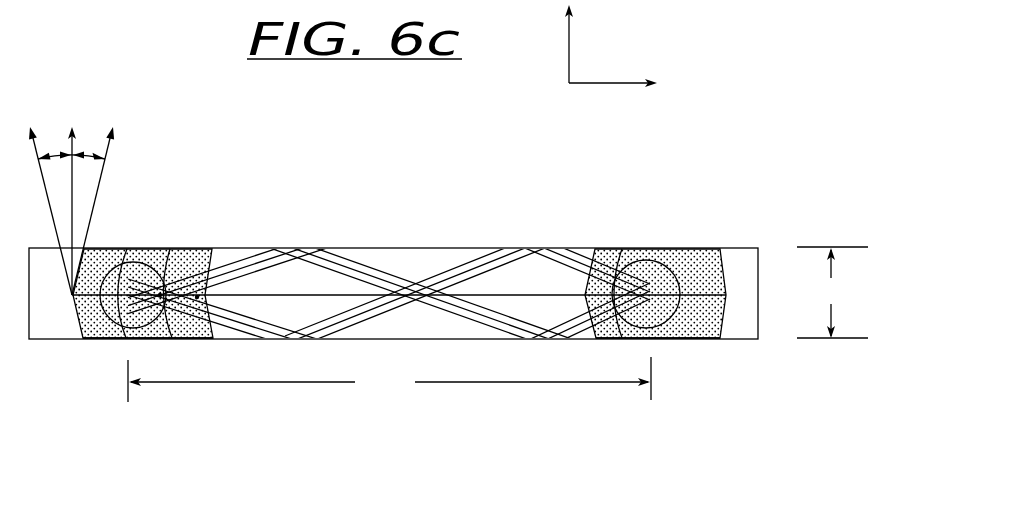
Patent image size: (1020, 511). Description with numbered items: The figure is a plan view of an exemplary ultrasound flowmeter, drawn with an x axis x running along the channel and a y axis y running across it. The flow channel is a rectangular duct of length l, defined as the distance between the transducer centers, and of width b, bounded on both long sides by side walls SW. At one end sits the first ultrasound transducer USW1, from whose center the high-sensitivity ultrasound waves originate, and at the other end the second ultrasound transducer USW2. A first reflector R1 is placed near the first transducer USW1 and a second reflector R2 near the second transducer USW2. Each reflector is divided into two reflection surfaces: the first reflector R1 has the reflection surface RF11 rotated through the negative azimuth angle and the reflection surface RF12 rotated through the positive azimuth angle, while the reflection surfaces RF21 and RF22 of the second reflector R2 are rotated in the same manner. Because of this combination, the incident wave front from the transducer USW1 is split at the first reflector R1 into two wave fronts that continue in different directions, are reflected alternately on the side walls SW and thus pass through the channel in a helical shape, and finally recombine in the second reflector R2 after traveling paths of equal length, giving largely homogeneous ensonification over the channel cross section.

The first ultrasound transducer USW1 is at (109, 262).
The second ultrasound transducer USW2 is at (654, 262).
The first reflection surface of first reflector RF11 is at (152, 342).
The second reflection surface of first reflector RF12 is at (158, 260).
The first reflection surface of second reflector RF21 is at (665, 340).
The second reflection surface of second reflector RF22 is at (667, 262).
The side walls SW is at (390, 248).
The first reflector R1 is at (139, 349).
The second reflector R2 is at (609, 350).
The flow channel length l is at (389, 379).
The width of the flow channel b is at (832, 292).
The x axis x is at (629, 85).
The y axis y is at (589, 41).